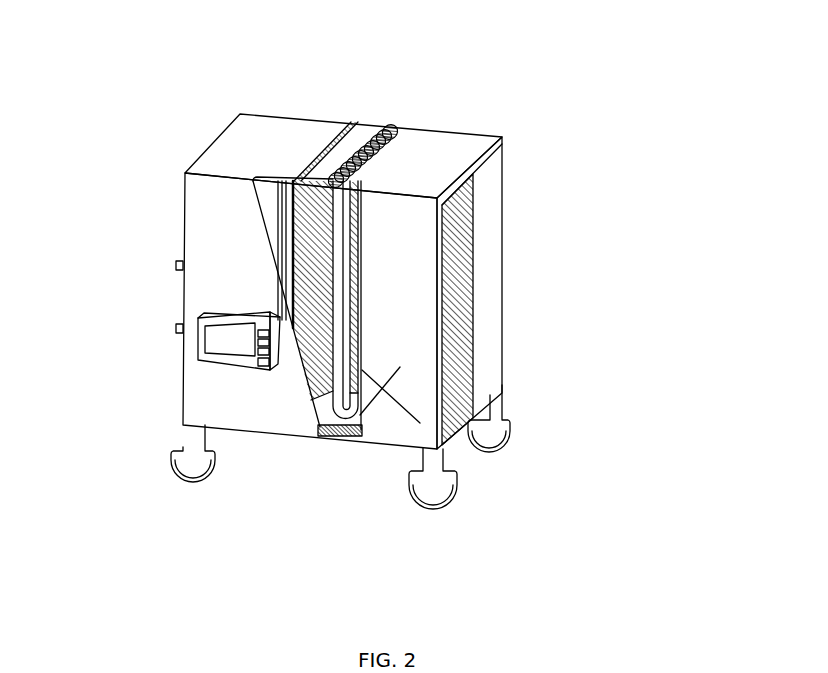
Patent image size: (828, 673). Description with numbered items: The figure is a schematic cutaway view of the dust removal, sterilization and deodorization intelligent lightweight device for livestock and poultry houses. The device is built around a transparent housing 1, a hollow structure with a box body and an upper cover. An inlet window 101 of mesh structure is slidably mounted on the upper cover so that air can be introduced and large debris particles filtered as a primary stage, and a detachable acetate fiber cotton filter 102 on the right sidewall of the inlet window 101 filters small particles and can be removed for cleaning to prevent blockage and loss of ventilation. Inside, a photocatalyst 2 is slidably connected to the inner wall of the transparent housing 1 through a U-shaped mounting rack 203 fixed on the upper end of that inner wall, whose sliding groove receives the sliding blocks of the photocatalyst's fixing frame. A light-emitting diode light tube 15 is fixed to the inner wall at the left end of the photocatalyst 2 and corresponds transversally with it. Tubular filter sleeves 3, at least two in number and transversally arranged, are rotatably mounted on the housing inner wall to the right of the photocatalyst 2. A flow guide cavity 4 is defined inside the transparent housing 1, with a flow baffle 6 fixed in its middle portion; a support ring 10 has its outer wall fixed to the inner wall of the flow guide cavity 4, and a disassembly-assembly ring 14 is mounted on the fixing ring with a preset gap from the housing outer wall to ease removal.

The transparent housing 1 is at (248, 392).
The photocatalyst 2 is at (294, 181).
The filter sleeve 3 is at (350, 185).
The flow guide cavity 4 is at (362, 407).
The flow baffle 6 is at (352, 430).
The support ring 10 is at (340, 430).
The disassembly-assembly ring 14 is at (393, 124).
The light-emitting diode (LED) light tube 15 is at (273, 250).
The inlet window 101 is at (502, 137).
The acetate fiber cotton filter 102 is at (490, 273).
The U-shaped mounting rack 203 is at (285, 204).